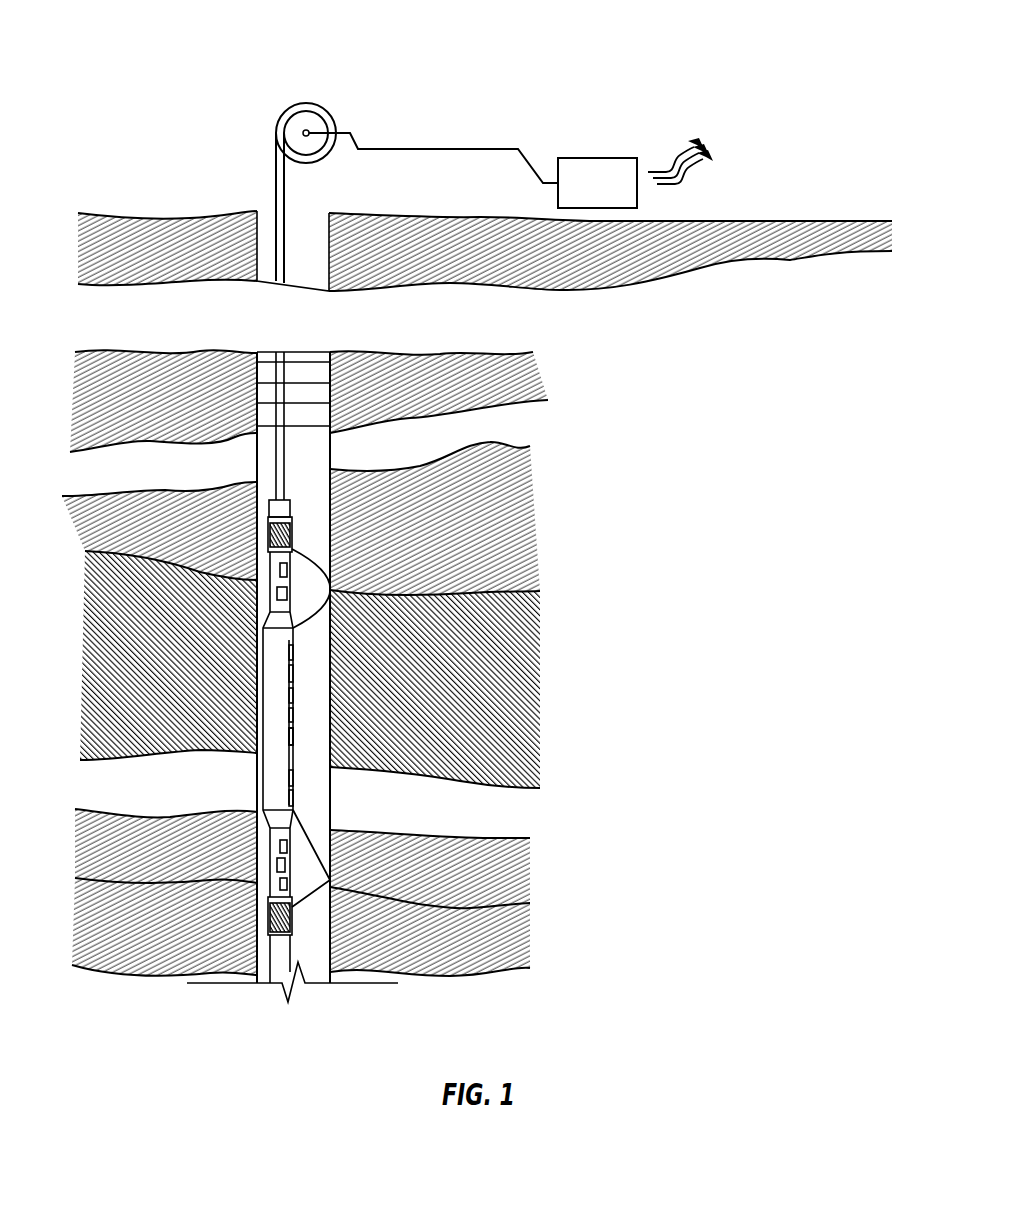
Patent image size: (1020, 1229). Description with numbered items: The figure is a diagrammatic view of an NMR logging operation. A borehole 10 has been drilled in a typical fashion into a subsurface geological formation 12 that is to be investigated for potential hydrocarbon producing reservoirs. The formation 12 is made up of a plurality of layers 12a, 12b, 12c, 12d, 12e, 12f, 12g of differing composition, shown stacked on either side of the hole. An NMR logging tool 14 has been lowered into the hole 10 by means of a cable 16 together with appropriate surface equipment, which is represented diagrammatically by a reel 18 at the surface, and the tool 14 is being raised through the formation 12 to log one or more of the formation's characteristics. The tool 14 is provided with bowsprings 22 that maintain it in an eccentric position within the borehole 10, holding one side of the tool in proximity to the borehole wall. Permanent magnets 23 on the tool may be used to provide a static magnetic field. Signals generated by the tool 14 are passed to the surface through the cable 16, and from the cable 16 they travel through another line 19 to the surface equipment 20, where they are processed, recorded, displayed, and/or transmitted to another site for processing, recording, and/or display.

The borehole 10 is at (318, 263).
The subsurface geological formation 12 is at (752, 43).
The formation layer 12a is at (533, 372).
The formation layer 12b is at (520, 432).
The formation layer 12c is at (520, 500).
The formation layer 12d is at (522, 683).
The formation layer 12e is at (528, 812).
The formation layer 12f is at (525, 878).
The formation layer 12g is at (523, 937).
The NMR logging tool 14 is at (268, 868).
The cable 16 is at (276, 182).
The reel 18 is at (307, 103).
The line 19 is at (450, 149).
The surface equipment 20 is at (598, 158).
The bowsprings 22 is at (332, 612).
The permanent magnets 23 is at (293, 735).